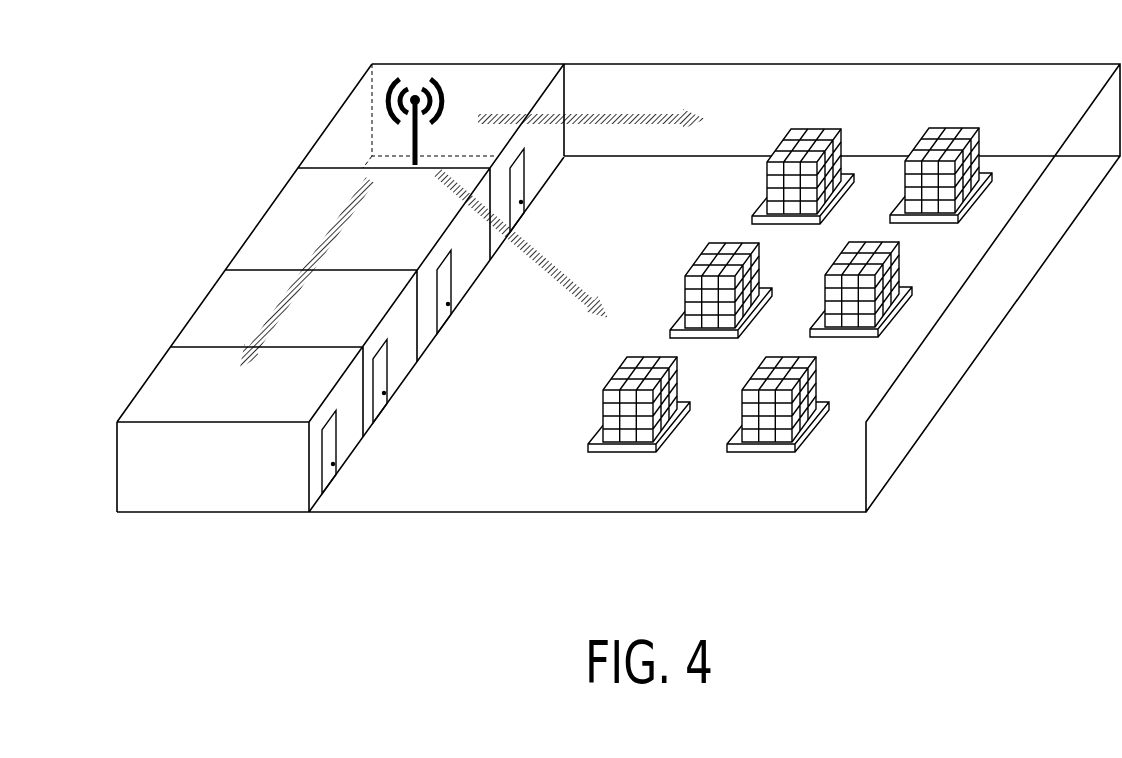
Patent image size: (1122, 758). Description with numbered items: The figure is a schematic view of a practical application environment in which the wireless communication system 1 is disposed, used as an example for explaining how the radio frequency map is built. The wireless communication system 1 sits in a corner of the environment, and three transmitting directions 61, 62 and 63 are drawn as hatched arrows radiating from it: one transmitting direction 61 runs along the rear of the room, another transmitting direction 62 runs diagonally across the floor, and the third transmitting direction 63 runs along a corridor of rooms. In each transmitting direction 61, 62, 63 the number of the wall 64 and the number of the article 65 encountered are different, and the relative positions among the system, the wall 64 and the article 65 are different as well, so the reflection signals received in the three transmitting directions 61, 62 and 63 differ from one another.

The wireless communication system 1 is at (418, 78).
The transmitting direction 61 is at (623, 115).
The transmitting direction 62 is at (562, 275).
The transmitting direction 63 is at (338, 220).
The wall 64 is at (350, 272).
The article 65 is at (892, 268).